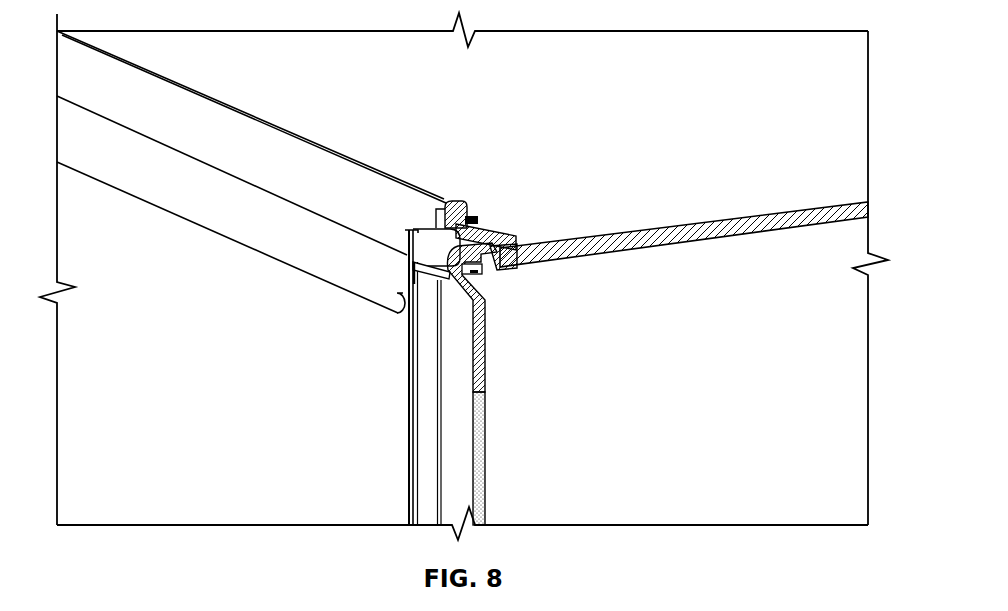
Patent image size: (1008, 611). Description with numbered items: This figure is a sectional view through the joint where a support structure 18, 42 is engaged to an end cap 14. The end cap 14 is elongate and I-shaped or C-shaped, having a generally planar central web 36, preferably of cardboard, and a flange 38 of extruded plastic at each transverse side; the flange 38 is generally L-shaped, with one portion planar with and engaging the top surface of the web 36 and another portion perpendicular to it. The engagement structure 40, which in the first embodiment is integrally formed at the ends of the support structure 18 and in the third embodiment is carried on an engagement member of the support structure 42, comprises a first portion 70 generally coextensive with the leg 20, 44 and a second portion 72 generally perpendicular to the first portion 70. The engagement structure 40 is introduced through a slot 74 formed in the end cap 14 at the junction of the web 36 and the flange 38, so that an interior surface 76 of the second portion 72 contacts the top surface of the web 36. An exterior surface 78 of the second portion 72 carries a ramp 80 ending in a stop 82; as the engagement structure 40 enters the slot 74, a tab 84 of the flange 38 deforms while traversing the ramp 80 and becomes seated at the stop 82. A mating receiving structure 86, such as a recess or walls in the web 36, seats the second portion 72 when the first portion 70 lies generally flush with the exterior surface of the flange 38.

The end cap 14 is at (684, 250).
The central web 36 is at (714, 204).
The flange 38 is at (266, 162).
The support structure 18 is at (352, 377).
The support structure 42 is at (380, 455).
The leg 20 is at (513, 384).
The leg 44 is at (513, 384).
The engagement structure 40 is at (532, 277).
The first portion 70 is at (412, 260).
The second portion 72 is at (405, 223).
The slot 74 is at (402, 292).
The interior surface 76 is at (498, 282).
The exterior surface 78 is at (450, 204).
The ramp 80 is at (503, 198).
The stop 82 is at (516, 244).
The tab 84 is at (478, 217).
The mating receiving structure 86 is at (471, 216).